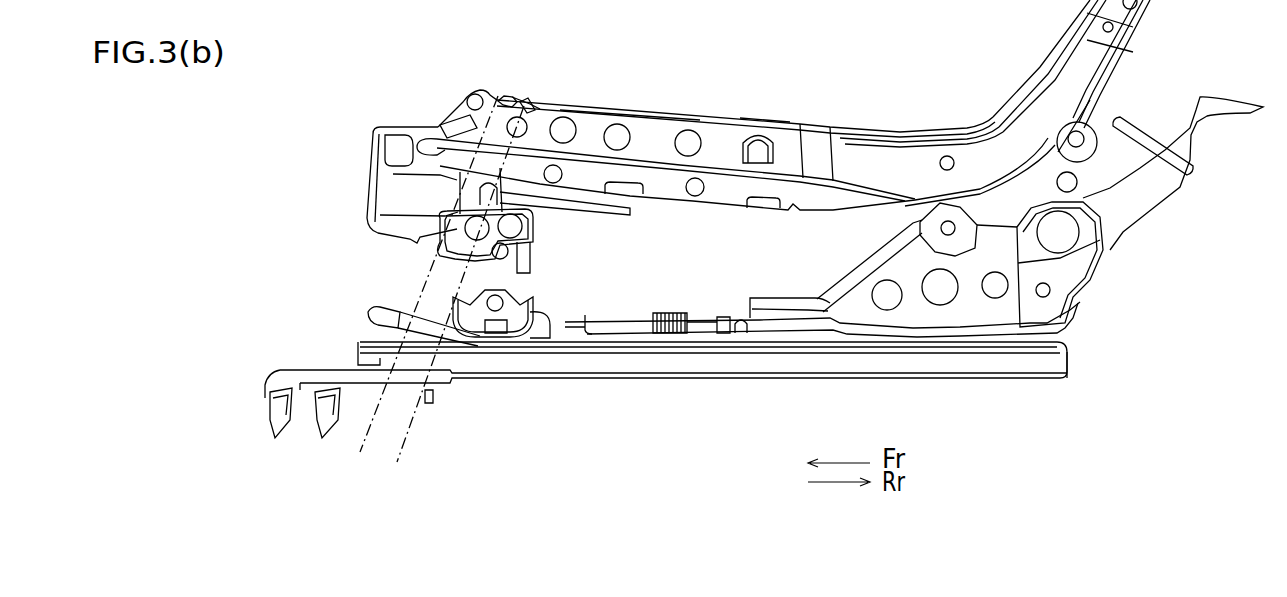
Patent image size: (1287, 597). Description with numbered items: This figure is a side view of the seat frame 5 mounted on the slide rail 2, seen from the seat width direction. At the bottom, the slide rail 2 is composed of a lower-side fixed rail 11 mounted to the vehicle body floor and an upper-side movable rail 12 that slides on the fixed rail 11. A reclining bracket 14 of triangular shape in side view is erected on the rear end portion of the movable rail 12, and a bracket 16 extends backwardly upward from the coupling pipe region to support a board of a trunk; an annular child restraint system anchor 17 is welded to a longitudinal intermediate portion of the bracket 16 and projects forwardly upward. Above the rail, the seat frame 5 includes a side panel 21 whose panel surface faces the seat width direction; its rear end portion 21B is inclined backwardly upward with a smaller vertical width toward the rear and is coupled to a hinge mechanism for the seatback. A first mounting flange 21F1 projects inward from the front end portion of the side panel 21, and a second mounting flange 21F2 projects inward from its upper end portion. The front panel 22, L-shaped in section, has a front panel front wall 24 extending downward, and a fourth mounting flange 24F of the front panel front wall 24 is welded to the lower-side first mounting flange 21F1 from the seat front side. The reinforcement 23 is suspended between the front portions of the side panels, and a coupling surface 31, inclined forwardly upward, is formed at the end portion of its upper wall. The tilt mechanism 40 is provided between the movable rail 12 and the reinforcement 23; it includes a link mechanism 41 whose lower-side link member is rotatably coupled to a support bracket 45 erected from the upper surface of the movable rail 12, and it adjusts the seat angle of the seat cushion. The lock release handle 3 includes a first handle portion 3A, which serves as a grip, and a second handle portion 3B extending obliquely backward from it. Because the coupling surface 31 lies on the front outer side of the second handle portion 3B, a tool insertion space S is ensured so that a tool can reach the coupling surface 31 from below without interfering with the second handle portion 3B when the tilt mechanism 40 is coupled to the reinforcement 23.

The slide rail 2 is at (755, 388).
The lock release handle 3 is at (355, 307).
The first handle portion 3A is at (365, 318).
The second handle portion 3B is at (430, 360).
The seat frame 5 is at (766, 70).
The fixed rail 11 is at (638, 365).
The movable rail 12 is at (583, 352).
The reclining bracket 14 is at (967, 277).
The bracket 16 is at (1140, 197).
The child restraint system anchor 17 is at (1142, 135).
The side panel 21 is at (788, 136).
The rear end portion of side panel 21B is at (1075, 70).
The first mounting flange 21F1 is at (460, 110).
The second mounting flange 21F2 is at (630, 110).
The front panel 22 is at (360, 183).
The reinforcement 23 is at (498, 88).
The front panel front wall 24 is at (370, 163).
The fourth mounting flange 24F is at (407, 165).
The coupling surface 31 is at (525, 100).
The tilt mechanism 40 is at (555, 253).
The link mechanism 41 is at (557, 263).
The support bracket 45 is at (543, 350).
The tool insertion space S is at (420, 297).